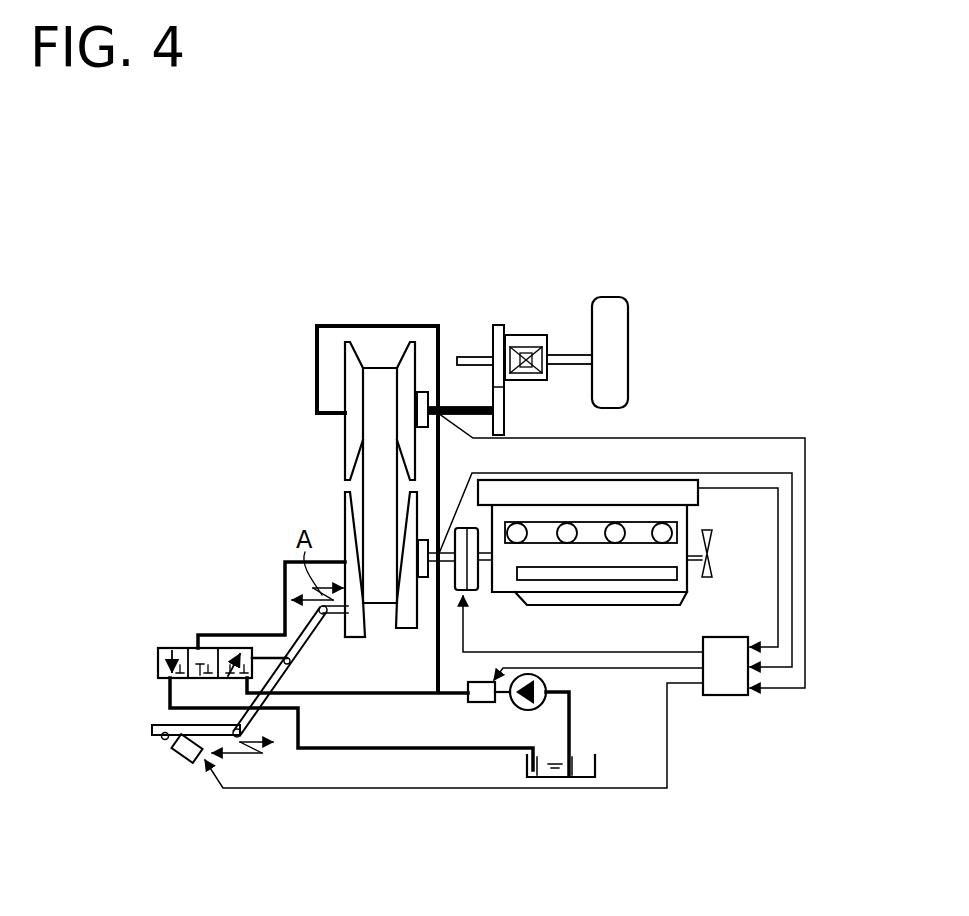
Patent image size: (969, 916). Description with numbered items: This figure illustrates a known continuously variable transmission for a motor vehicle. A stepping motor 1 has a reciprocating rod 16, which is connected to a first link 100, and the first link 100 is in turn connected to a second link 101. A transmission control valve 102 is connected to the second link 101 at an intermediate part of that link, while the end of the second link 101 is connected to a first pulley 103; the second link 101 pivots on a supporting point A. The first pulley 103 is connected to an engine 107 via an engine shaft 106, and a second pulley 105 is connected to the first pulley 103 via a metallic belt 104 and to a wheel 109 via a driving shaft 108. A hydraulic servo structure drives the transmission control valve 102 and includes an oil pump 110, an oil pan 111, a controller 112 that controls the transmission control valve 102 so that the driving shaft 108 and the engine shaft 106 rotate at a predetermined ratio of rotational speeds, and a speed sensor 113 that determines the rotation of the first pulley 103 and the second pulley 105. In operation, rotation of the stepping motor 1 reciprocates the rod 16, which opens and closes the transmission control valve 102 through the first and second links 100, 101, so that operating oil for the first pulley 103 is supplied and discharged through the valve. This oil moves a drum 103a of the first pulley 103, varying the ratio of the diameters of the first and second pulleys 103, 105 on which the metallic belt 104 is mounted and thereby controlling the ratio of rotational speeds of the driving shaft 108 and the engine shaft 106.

The stepping motor 1 is at (183, 756).
The reciprocating rod 16 is at (165, 738).
The first link 100 is at (157, 727).
The second link 101 is at (303, 612).
The transmission control valve 102 is at (167, 650).
The first pulley 103 is at (347, 500).
The drum 103a is at (350, 640).
The metallic belt 104 is at (380, 372).
The second pulley 105 is at (352, 340).
The engine shaft 106 is at (444, 594).
The engine 107 is at (647, 487).
The driving shaft 108 is at (440, 410).
The wheel 109 is at (617, 308).
The oil pump 110 is at (518, 712).
The oil pan 111 is at (583, 777).
The controller 112 is at (722, 697).
The speed sensor 113 is at (421, 392).